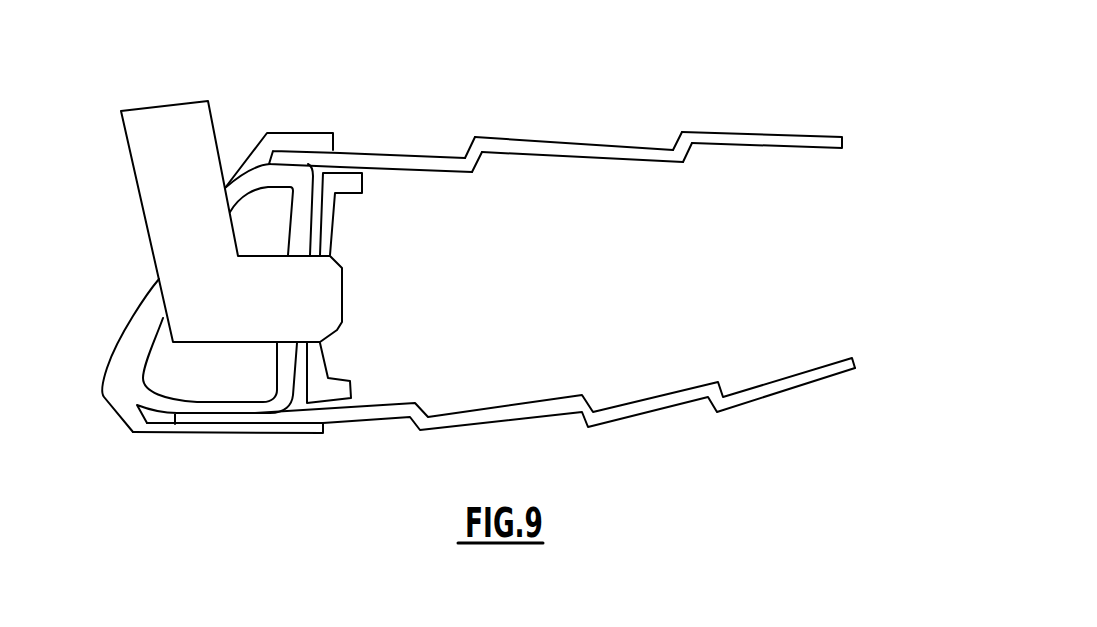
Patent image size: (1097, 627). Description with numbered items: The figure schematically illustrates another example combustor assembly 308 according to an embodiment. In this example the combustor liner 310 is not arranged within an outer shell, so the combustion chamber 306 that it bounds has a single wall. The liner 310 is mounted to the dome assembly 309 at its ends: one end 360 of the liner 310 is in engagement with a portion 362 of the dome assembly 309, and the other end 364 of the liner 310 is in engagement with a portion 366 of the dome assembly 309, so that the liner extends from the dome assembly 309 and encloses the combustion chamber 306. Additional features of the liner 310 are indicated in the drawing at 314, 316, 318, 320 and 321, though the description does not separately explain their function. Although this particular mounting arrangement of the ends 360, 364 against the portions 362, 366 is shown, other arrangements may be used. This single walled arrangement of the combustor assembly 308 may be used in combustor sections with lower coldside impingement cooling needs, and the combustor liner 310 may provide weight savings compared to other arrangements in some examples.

The combustion chamber 306 is at (835, 273).
The combustor assembly 308 is at (708, 76).
The dome assembly 309 is at (140, 398).
The combustor liner 310 is at (412, 163).
The first plate segment 314 is at (436, 170).
The second plate segment 316 is at (593, 152).
The distal end segment 318 is at (773, 140).
The first step 320 is at (477, 158).
The second step 321 is at (687, 147).
The end 360 is at (252, 420).
The portion 362 is at (287, 433).
The end 364 is at (307, 158).
The portion 366 is at (293, 140).